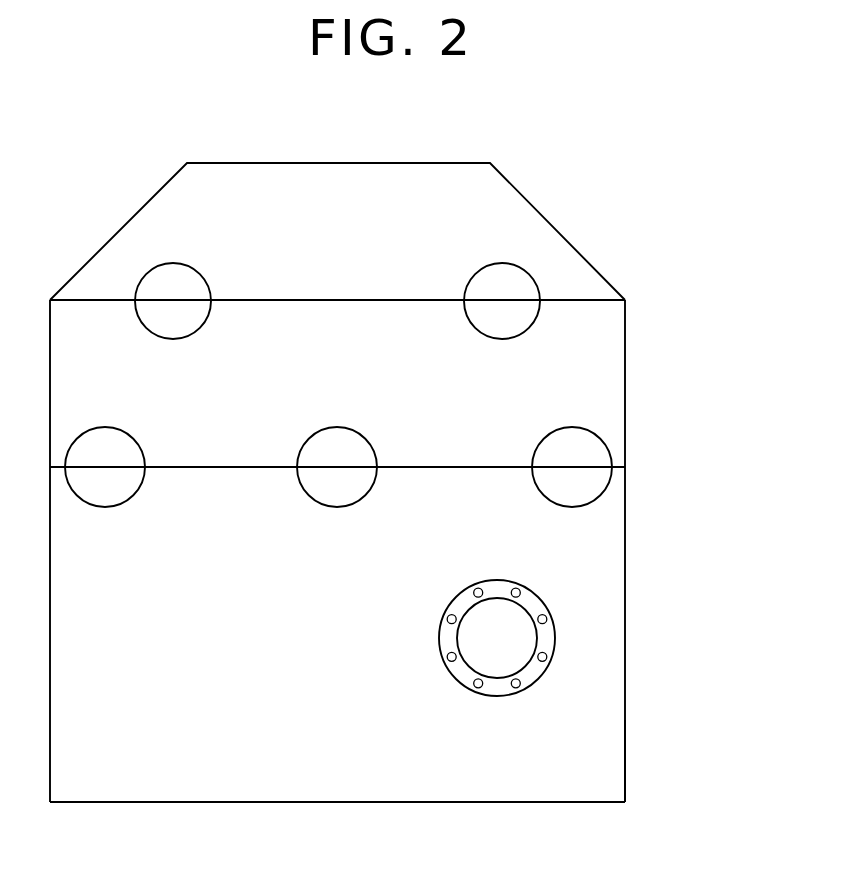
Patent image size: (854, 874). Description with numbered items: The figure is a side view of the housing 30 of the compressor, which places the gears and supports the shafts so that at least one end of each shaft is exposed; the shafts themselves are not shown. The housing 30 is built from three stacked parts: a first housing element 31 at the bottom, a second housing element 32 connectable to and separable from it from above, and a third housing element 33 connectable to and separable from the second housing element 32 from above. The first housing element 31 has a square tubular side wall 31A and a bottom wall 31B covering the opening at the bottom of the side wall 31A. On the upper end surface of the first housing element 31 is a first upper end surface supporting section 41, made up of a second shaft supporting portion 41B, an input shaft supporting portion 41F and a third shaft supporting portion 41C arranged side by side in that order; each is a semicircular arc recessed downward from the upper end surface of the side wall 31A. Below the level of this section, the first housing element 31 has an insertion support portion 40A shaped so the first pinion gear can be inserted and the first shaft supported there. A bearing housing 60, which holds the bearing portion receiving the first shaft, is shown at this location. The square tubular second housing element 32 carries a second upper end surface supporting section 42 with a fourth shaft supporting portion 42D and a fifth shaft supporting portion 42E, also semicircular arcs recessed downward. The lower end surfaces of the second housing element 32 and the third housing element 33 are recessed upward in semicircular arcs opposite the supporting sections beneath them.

The housing 30 is at (438, 501).
The first housing element 31 is at (410, 779).
The side wall 31A is at (602, 750).
The bottom wall 31B is at (382, 820).
The second housing element 32 is at (600, 370).
The third housing element 33 is at (568, 262).
The first upper end surface supporting section 41 is at (338, 520).
The second shaft supporting portion 41B is at (138, 492).
The input shaft supporting portion 41F is at (335, 505).
The third shaft supporting portion 41C is at (509, 498).
The second upper end surface supporting section 42 is at (337, 335).
The fourth shaft supporting portion 42D is at (205, 323).
The fifth shaft supporting portion 42E is at (470, 323).
The bearing housing 60 is at (465, 669).
The insertion support portion 40A is at (478, 680).